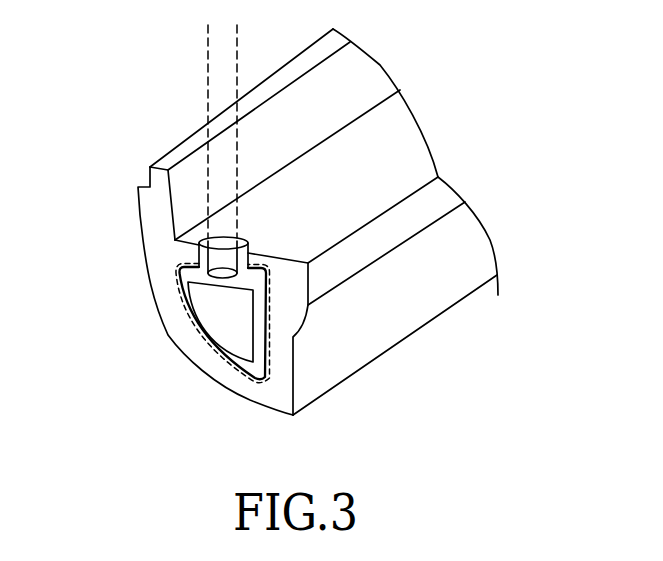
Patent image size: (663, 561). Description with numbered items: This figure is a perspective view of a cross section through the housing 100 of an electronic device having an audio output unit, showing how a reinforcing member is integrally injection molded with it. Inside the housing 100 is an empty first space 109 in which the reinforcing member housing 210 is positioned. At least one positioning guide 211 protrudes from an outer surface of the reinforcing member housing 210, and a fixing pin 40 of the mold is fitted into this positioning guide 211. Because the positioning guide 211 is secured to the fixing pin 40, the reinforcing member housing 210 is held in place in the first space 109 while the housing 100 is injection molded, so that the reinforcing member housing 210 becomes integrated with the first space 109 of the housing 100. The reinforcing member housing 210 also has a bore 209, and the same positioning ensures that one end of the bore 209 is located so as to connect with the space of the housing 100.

The housing 100 is at (400, 143).
The fixing pin 40 is at (210, 77).
The positioning guide 211 is at (187, 264).
The first space 109 is at (190, 318).
The bore 209 is at (228, 322).
The reinforcing member housing 210 is at (268, 347).